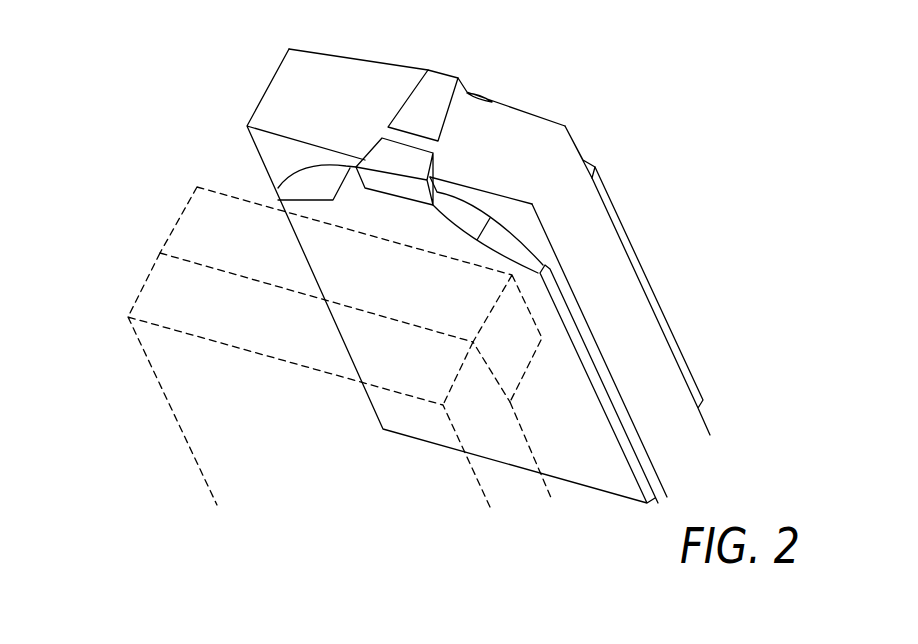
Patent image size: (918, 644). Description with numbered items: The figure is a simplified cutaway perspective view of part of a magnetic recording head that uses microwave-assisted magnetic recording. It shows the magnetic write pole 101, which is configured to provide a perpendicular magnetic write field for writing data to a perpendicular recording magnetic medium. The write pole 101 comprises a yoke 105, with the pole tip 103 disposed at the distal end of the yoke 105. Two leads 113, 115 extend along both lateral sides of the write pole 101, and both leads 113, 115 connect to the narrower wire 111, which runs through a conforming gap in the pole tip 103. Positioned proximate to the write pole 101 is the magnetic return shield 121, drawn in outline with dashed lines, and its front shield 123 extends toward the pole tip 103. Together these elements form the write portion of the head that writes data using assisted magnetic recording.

The magnetic write pole 101 is at (603, 125).
The pole tip 103 is at (443, 72).
The yoke 105 is at (632, 233).
The wire 111 is at (405, 132).
The lead 113 is at (537, 117).
The lead 115 is at (277, 72).
The magnetic return shield 121 is at (160, 389).
The front shield 123 is at (178, 218).